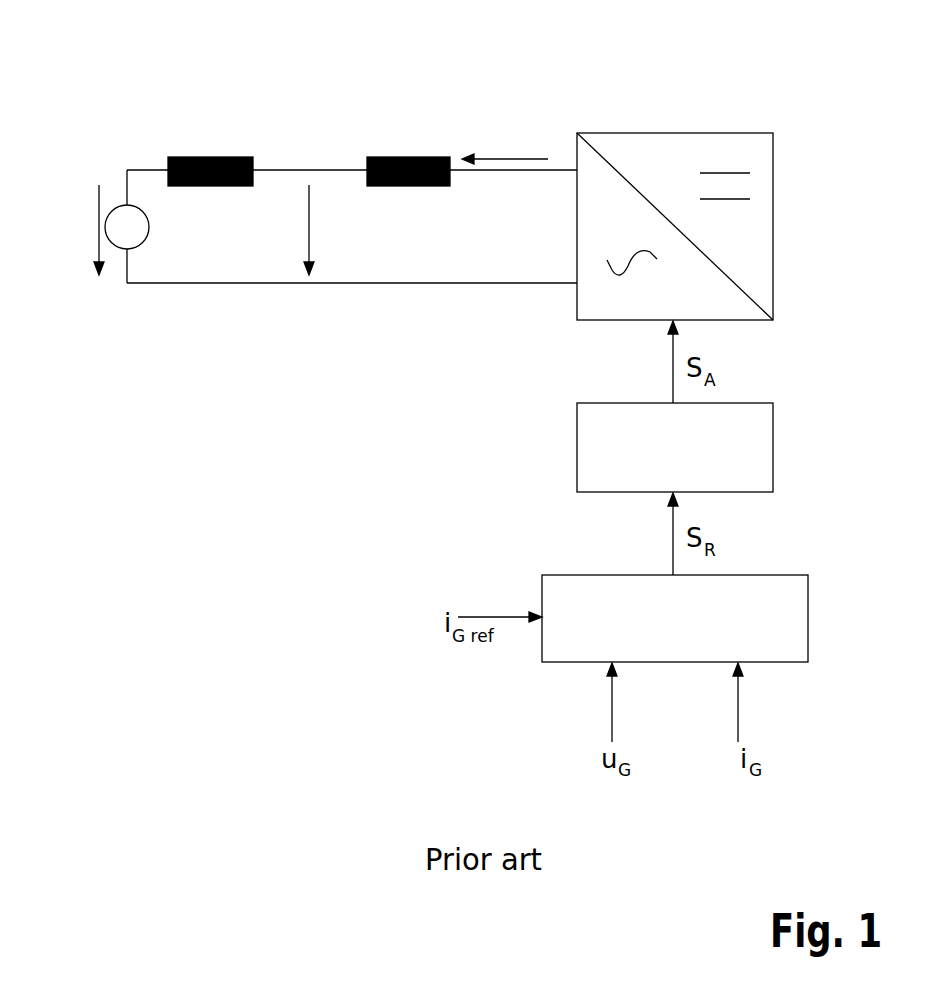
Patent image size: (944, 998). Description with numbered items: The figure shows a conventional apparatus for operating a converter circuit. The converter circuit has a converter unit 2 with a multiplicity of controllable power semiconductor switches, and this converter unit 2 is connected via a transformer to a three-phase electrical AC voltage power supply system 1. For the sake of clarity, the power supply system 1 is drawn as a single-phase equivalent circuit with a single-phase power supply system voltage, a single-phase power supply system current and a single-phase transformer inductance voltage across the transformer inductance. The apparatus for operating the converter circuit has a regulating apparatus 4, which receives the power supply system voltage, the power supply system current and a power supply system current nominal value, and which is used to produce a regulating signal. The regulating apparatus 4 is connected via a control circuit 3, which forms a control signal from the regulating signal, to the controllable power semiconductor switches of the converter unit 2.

The three-phase electrical AC voltage power supply system 1 is at (277, 138).
The converter unit 2 is at (653, 133).
The control circuit 3 is at (665, 460).
The regulating apparatus 4 is at (667, 634).